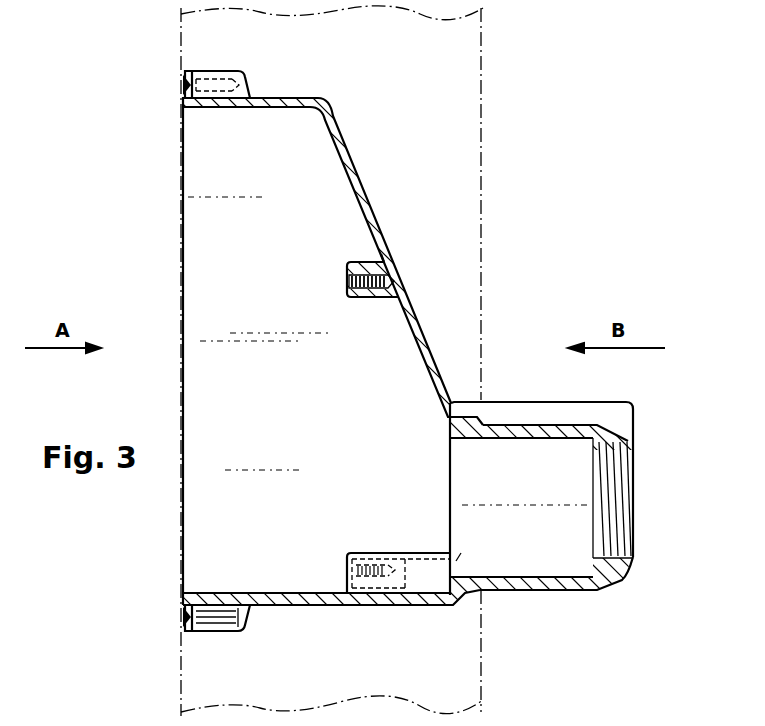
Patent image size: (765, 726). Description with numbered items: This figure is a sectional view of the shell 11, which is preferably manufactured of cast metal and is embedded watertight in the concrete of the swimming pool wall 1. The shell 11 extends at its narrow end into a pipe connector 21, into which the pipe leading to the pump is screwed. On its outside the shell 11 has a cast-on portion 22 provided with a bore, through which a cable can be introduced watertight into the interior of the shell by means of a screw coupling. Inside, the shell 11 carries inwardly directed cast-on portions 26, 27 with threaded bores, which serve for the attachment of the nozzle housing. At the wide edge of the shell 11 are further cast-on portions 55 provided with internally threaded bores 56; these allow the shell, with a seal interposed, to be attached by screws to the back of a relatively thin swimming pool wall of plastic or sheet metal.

The swimming pool wall 1 is at (457, 100).
The shell 11 is at (370, 198).
The pipe connector 21 is at (557, 584).
The cast-on portion 22 is at (521, 402).
The inwardly directed cast-on portion 26 is at (358, 264).
The inwardly directed cast-on portion 27 is at (366, 552).
The cast-on portion 55 is at (243, 80).
The internally threaded bore 56 is at (185, 82).